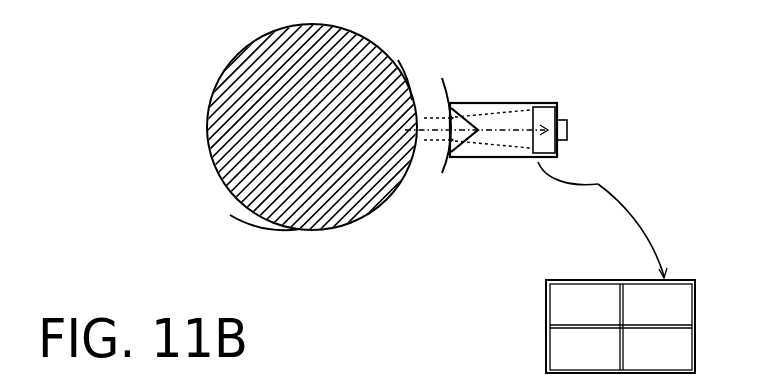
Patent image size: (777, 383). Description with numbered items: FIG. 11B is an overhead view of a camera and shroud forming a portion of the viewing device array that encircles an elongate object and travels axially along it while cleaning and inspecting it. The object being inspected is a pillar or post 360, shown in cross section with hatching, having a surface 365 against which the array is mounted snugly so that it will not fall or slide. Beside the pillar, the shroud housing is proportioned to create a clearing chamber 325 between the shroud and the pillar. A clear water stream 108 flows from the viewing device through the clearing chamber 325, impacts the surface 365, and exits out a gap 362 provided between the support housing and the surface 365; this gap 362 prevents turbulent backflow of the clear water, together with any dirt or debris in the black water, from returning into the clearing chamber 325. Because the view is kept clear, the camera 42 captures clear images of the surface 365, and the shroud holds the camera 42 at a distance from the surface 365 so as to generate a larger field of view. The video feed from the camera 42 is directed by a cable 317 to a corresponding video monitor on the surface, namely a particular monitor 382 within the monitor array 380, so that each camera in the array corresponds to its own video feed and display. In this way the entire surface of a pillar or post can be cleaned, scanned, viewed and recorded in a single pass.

The pillar or post 360 is at (210, 113).
The surface 365 is at (248, 213).
The gap 362 is at (403, 70).
The clear water stream 108 is at (430, 140).
The clearing chamber 325 is at (431, 94).
The camera 42 is at (490, 140).
The cable 317 is at (598, 184).
The monitor array 380 is at (546, 318).
The monitor 382 is at (678, 296).